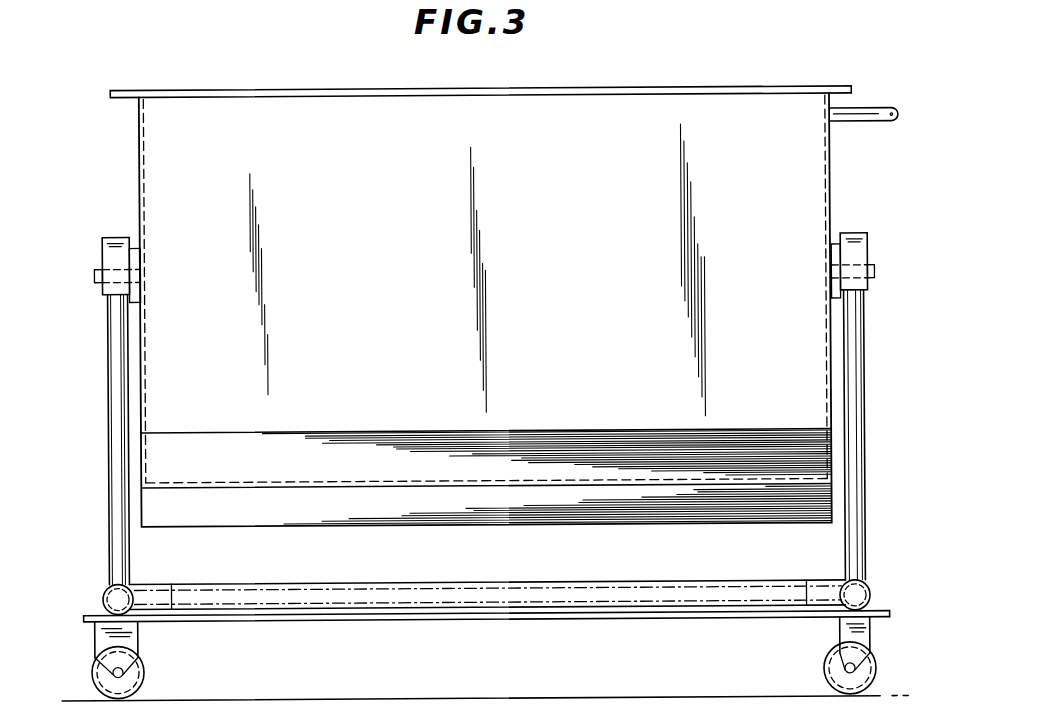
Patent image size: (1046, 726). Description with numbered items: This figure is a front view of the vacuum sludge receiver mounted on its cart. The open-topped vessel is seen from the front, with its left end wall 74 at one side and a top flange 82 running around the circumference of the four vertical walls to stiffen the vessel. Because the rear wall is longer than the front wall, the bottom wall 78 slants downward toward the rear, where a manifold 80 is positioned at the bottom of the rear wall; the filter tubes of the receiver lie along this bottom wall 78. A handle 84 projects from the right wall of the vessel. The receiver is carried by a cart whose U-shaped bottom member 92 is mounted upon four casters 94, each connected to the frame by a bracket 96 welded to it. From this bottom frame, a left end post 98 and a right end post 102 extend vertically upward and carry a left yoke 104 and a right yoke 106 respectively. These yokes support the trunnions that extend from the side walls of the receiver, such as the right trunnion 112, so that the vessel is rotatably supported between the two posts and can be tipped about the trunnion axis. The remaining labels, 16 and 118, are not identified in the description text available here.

The basket body 16 is at (832, 176).
The left end wall 74 is at (138, 181).
The bottom wall 78 is at (428, 470).
The manifold 80 is at (570, 524).
The top flange 82 is at (124, 88).
The handle 84 is at (886, 109).
The U-shaped bottom member 92 is at (437, 619).
The casters 94 is at (140, 677).
The brackets 96 is at (104, 606).
The left end post 98 is at (108, 394).
The right end post 102 is at (858, 404).
The left yoke 104 is at (108, 251).
The right yoke 106 is at (866, 253).
The right trunnion 112 is at (875, 267).
The left pivot bolt 118 is at (95, 277).